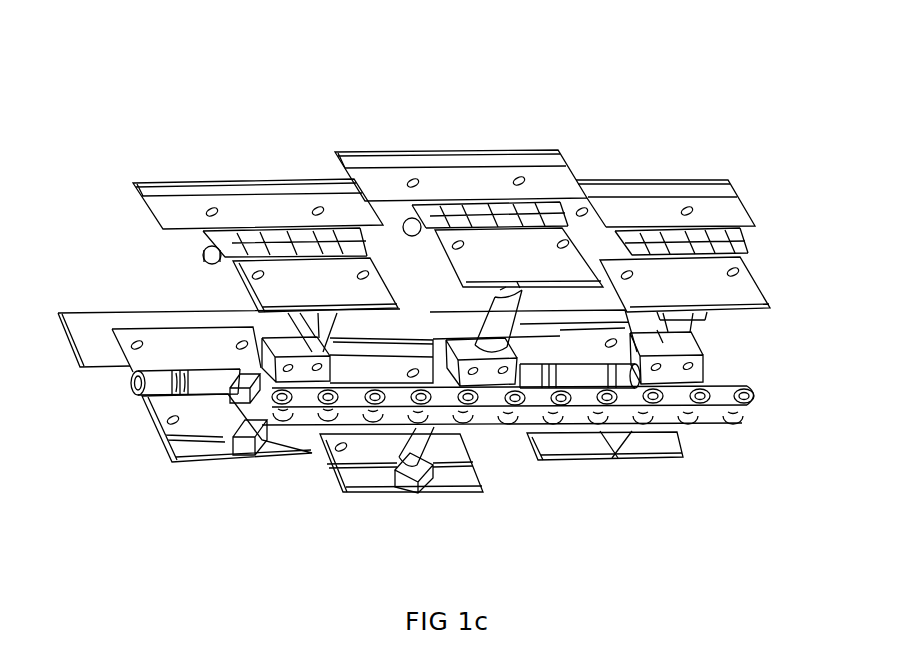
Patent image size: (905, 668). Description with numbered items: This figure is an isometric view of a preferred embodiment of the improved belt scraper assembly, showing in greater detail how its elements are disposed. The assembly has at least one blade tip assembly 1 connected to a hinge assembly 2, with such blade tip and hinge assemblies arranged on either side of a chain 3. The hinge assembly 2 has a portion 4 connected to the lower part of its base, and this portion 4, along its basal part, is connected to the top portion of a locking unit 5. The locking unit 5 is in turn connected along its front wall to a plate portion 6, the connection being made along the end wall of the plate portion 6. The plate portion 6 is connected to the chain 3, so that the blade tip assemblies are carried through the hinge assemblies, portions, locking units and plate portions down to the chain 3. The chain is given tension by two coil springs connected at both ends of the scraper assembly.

The blade tip assembly 1 is at (255, 158).
The hinge assembly 2 is at (213, 287).
The chain 3 is at (760, 430).
The portion 4 is at (512, 334).
The locking unit 5 is at (455, 372).
The plate portion 6 is at (598, 438).